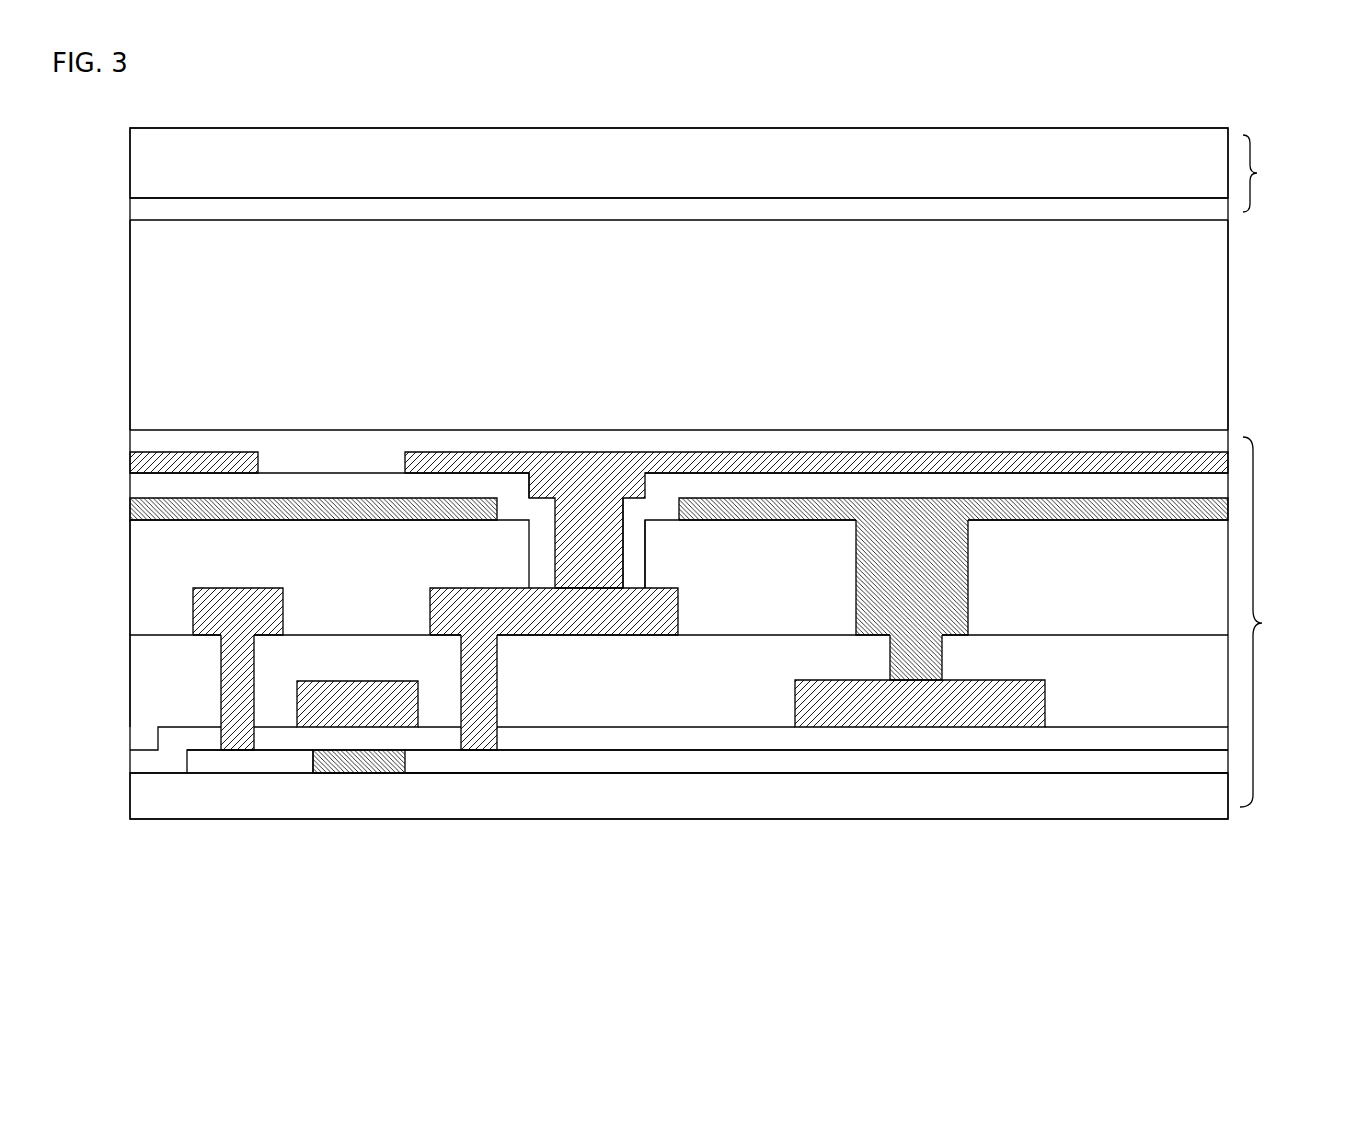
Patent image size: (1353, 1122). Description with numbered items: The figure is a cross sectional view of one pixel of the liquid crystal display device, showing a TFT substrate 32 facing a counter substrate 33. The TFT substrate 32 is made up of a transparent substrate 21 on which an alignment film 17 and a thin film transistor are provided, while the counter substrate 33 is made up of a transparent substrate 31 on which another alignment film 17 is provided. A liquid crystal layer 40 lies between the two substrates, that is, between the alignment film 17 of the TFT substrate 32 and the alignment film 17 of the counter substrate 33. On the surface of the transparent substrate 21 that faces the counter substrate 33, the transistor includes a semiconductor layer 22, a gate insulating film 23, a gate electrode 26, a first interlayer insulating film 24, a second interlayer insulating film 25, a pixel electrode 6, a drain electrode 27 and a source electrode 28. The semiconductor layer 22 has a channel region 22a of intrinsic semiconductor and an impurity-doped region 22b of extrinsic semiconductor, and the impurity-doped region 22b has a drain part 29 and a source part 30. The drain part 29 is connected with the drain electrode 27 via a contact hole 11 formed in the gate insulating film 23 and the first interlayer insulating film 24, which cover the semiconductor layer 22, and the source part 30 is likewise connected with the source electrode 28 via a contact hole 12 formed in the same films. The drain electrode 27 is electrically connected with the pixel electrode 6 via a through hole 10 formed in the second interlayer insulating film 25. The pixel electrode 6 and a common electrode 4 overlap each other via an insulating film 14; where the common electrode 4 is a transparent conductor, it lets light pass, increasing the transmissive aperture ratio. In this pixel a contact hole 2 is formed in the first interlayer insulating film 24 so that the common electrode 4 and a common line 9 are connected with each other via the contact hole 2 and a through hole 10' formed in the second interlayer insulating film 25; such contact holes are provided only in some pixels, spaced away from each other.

The contact hole 2 is at (942, 659).
The common electrode 4 is at (150, 510).
The pixel electrode 6 is at (211, 460).
The common line 9 is at (947, 710).
The through hole 10 is at (665, 543).
The through hole 10' is at (941, 577).
The contact hole 11 is at (486, 652).
The contact hole 12 is at (226, 697).
The insulating film 14 is at (156, 485).
The alignment film 17 is at (150, 210).
The transparent substrate 21 is at (1168, 808).
The semiconductor layer 22 is at (662, 867).
The channel region 22a is at (407, 757).
The impurity-doped region 22b is at (628, 760).
The gate insulating film 23 is at (144, 763).
The first interlayer insulating film 24 is at (150, 686).
The second interlayer insulating film 25 is at (144, 571).
The gate electrode 26 is at (355, 700).
The drain electrode 27 is at (478, 608).
The source electrode 28 is at (232, 615).
The drain part 29 is at (437, 763).
The source part 30 is at (253, 763).
The transparent substrate 31 is at (148, 151).
The TFT substrate 32 is at (1271, 622).
The counter substrate 33 is at (1271, 173).
The liquid crystal layer 40 is at (153, 337).